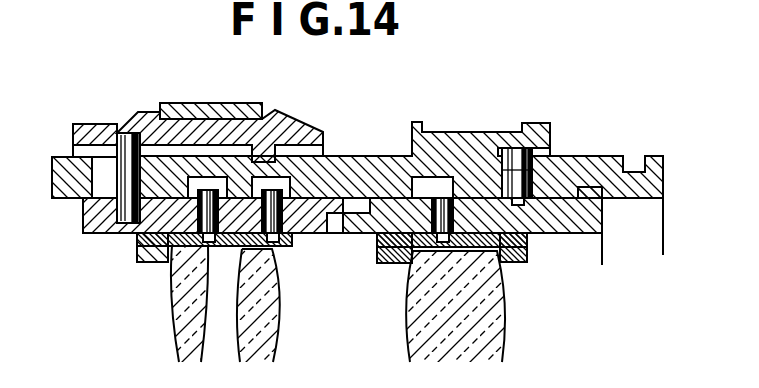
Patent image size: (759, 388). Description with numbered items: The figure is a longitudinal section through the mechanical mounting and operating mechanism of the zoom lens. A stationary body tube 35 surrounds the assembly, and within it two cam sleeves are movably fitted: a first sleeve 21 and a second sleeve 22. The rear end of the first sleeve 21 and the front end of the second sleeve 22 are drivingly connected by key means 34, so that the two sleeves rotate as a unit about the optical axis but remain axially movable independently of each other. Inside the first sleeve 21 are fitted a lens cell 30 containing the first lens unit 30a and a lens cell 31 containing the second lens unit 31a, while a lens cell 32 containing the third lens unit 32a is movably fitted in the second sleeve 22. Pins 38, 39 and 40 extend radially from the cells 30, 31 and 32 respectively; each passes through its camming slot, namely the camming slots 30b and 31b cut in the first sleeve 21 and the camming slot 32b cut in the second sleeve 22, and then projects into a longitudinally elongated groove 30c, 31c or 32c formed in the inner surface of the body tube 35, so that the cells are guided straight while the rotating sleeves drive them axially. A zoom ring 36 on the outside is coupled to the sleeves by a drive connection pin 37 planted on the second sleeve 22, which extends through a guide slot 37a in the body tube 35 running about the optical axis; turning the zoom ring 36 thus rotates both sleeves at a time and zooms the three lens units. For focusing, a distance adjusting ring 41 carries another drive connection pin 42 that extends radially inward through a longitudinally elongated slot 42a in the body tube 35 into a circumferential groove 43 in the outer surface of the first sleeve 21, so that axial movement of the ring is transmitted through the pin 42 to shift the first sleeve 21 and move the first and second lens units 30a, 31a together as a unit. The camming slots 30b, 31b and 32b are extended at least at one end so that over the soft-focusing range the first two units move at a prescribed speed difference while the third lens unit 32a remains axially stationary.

The first sleeve 21 is at (84, 222).
The second sleeve 22 is at (597, 205).
The lens cell 30 is at (138, 246).
The first lens unit 30a is at (178, 341).
The camming slot 30b is at (226, 244).
The longitudinally elongated groove 30c is at (203, 182).
The lens cell 31 is at (291, 250).
The second lens unit 31a is at (278, 345).
The camming slot 31b is at (327, 232).
The longitudinally elongated groove 31c is at (323, 153).
The lens cell 32 is at (398, 222).
The third lens unit 32a is at (508, 347).
The camming slot 32b is at (527, 283).
The longitudinally elongated groove 32c is at (428, 185).
The key means 34 is at (362, 196).
The body tube 35 is at (648, 172).
The zoom ring 36 is at (537, 124).
The drive connection pin 37 is at (535, 153).
The guide slot 37a is at (533, 174).
The pin 38 is at (148, 263).
The pin 39 is at (289, 236).
The pin 40 is at (378, 263).
The distance adjusting ring 41 is at (86, 136).
The drive connection pin 42 is at (122, 132).
The longitudinally elongated slot 42a is at (98, 185).
The circumferential groove 43 is at (120, 231).